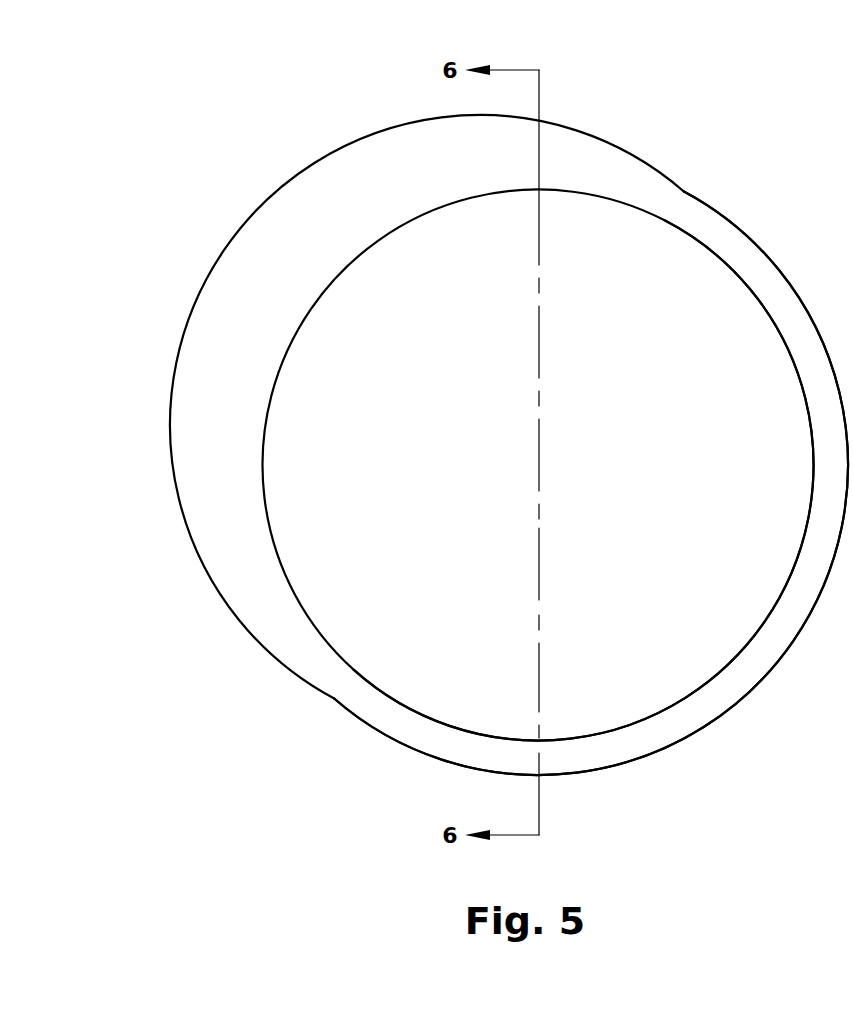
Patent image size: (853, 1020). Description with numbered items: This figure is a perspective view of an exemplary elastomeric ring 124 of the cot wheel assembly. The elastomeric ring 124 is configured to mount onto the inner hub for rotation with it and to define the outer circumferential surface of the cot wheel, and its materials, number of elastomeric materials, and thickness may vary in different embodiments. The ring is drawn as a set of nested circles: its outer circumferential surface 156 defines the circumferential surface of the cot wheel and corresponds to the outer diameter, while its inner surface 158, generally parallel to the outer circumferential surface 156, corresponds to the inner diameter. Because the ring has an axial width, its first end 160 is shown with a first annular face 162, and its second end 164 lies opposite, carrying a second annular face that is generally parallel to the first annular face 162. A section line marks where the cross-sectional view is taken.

The elastomeric ring 124 is at (509, 428).
The outer circumferential surface 156 is at (255, 247).
The inner surface 158 is at (623, 683).
The first end 160 is at (440, 742).
The first annular face 162 is at (633, 742).
The second end 164 is at (708, 542).